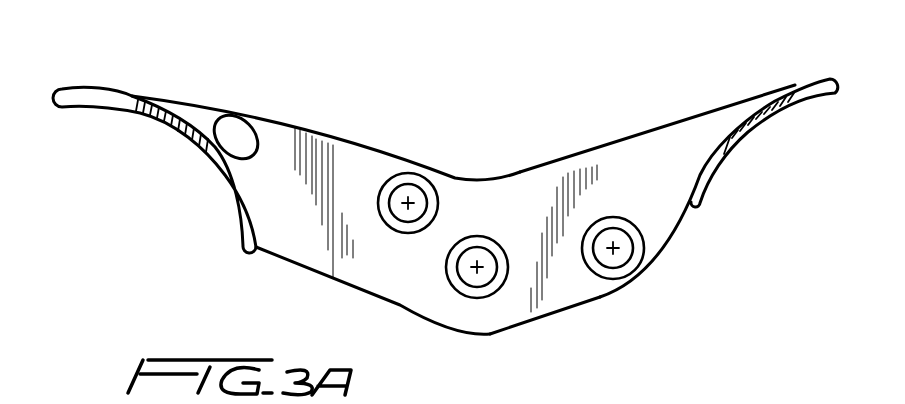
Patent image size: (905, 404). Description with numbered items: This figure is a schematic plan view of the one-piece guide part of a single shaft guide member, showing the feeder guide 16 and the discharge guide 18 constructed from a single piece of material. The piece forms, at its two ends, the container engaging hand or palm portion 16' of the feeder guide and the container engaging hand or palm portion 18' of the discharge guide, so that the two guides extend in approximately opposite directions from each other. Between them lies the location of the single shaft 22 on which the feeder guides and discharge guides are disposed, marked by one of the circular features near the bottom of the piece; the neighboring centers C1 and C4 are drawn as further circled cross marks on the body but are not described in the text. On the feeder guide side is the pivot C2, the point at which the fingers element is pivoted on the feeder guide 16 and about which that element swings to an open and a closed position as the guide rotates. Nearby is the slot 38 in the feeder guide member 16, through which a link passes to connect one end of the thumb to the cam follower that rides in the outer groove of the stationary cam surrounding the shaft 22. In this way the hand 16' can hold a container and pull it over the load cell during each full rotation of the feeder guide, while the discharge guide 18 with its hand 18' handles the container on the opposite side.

The container engaging hand portion 16' is at (154, 131).
The container engaging hand portion 18' is at (719, 157).
The feeder guide 16 is at (326, 212).
The discharge guide 18 is at (642, 209).
The slot 38 is at (247, 129).
The single shaft 22 is at (466, 284).
The center point C1 is at (483, 269).
The pivot C2 is at (418, 196).
The center point C4 is at (620, 255).